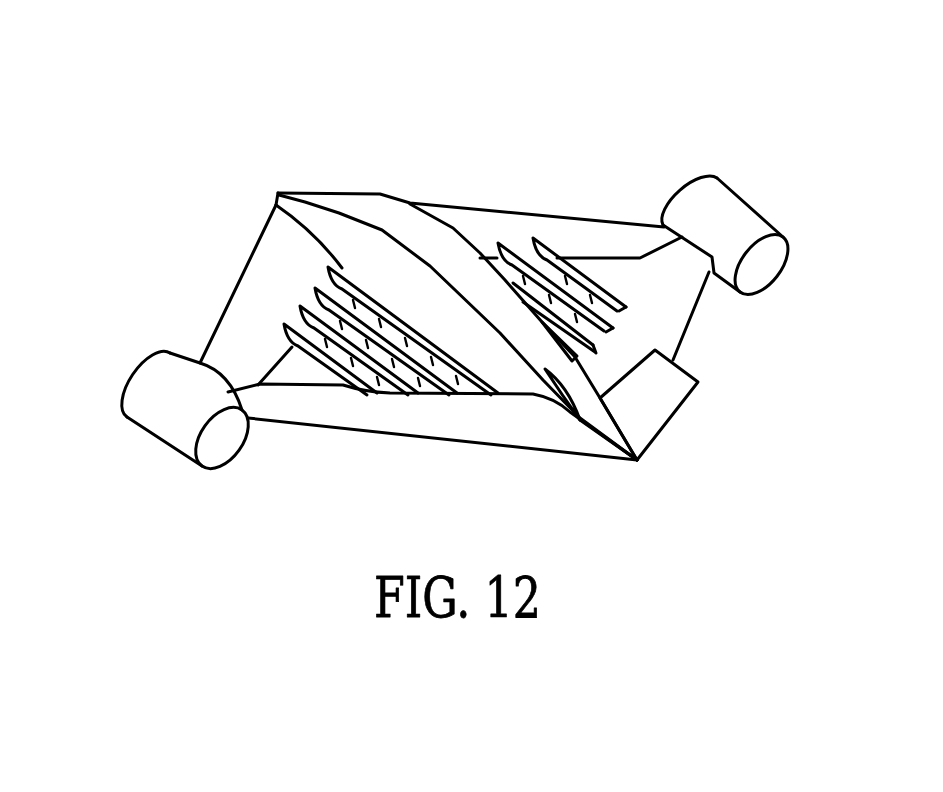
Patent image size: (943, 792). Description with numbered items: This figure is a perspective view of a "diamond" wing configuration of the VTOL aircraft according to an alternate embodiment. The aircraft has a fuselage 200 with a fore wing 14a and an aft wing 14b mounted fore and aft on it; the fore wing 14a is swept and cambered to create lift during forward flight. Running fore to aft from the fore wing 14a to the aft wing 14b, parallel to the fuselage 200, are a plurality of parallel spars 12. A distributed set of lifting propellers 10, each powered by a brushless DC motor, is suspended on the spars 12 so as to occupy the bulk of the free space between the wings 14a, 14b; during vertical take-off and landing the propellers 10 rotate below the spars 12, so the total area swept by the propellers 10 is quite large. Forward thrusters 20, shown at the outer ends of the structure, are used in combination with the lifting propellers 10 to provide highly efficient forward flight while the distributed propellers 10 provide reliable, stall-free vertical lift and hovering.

The fuselage 200 is at (358, 203).
The lifting propellers 10 is at (287, 348).
The spars 12 is at (328, 367).
The fore wing 14a is at (262, 272).
The aft wing 14b is at (424, 430).
The forward thrusters 20 is at (125, 417).